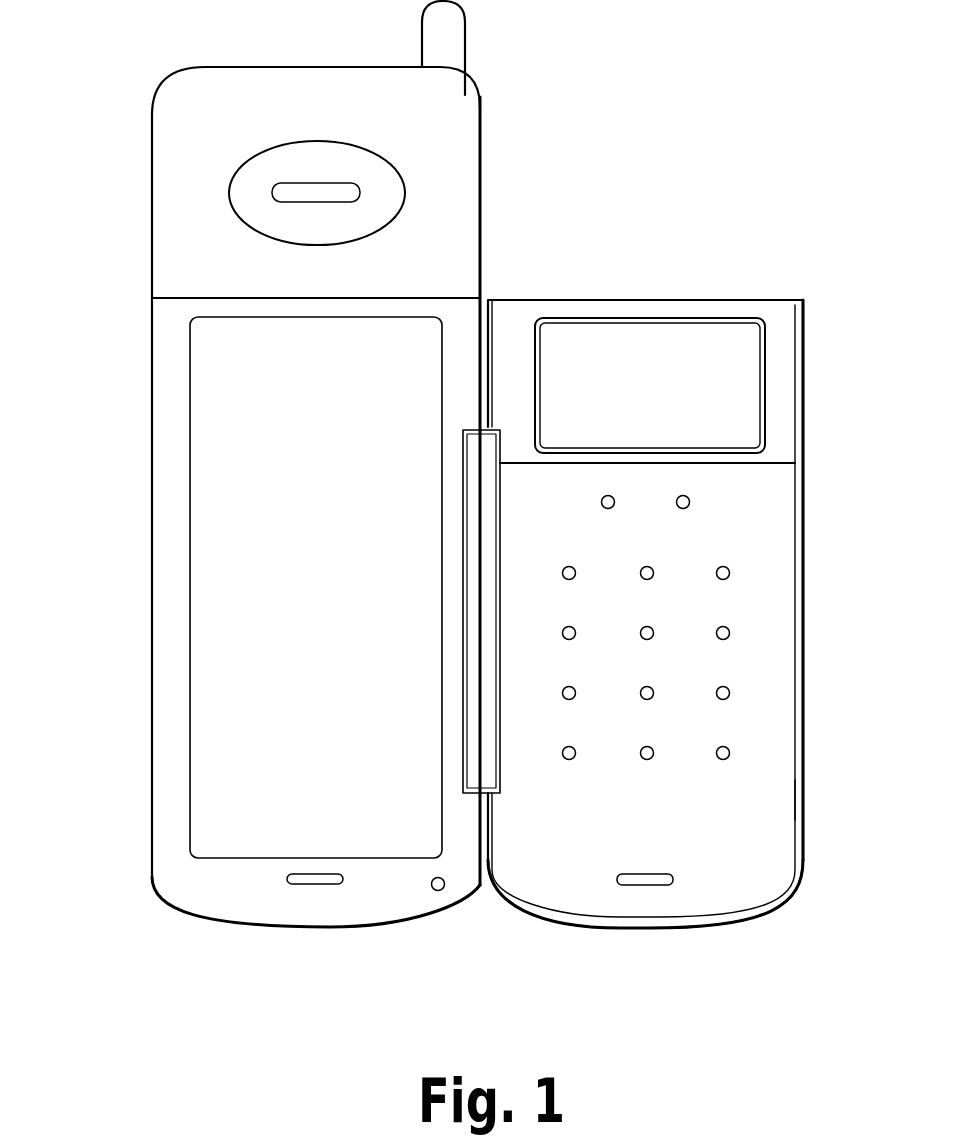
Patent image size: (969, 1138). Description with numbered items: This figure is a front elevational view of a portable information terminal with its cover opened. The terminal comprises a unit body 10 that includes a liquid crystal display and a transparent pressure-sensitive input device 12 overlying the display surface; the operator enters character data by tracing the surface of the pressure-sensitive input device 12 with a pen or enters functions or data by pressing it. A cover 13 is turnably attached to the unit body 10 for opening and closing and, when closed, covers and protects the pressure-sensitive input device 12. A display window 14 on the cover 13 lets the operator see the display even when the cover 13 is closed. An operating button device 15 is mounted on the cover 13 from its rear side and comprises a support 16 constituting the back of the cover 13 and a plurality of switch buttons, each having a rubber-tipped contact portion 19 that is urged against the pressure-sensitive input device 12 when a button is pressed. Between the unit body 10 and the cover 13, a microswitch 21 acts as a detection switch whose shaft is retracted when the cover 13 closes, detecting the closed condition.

The unit body 10 is at (150, 196).
The pressure-sensitive input device 12 is at (202, 507).
The cover 13 is at (805, 383).
The display window 14 is at (592, 328).
The operating button device 15 is at (788, 582).
The support 16 is at (785, 800).
The contact portion 19 is at (691, 502).
The microswitch 21 is at (445, 890).